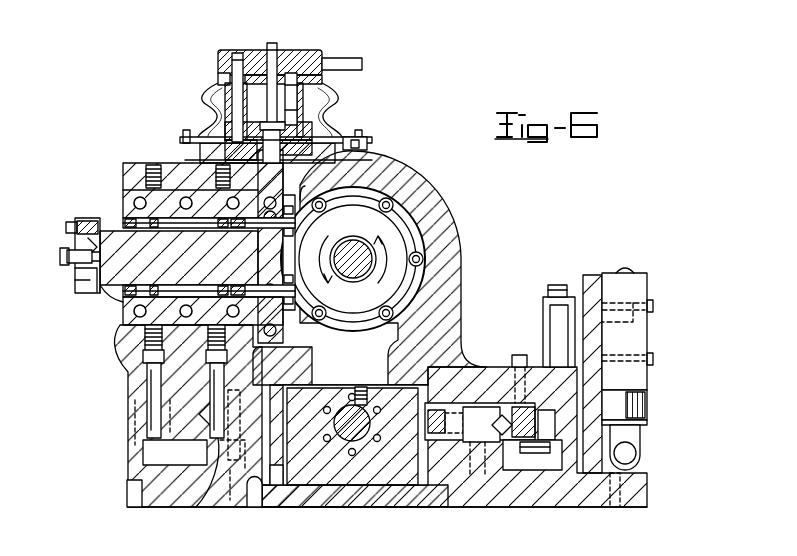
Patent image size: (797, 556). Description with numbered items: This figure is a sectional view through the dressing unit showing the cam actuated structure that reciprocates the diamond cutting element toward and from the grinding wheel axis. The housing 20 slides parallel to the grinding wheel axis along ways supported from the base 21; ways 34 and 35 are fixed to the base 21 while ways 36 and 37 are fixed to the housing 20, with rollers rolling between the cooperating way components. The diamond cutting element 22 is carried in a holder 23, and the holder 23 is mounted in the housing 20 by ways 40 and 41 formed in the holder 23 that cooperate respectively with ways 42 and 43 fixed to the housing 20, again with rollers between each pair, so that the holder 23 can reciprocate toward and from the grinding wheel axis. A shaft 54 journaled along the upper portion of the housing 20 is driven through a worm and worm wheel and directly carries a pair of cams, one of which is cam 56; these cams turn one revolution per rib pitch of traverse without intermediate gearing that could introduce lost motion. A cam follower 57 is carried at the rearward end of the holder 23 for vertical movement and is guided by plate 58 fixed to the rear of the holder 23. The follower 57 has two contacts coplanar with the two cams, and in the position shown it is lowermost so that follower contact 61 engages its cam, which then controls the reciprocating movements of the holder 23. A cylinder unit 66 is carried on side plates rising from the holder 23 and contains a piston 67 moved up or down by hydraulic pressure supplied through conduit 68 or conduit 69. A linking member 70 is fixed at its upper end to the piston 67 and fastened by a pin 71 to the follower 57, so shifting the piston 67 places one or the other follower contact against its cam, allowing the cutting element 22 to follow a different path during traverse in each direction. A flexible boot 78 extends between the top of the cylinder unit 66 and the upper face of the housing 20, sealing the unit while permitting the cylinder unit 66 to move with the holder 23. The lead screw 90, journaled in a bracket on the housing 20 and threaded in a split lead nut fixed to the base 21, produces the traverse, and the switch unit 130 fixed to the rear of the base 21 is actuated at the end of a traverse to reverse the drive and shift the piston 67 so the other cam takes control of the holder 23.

The housing 20 is at (427, 194).
The base 21 is at (517, 503).
The diamond cutting element 22 is at (63, 262).
The holder 23 is at (103, 222).
The way 34 is at (200, 505).
The way 35 is at (515, 449).
The way 36 is at (175, 452).
The way 37 is at (528, 449).
The way 40 is at (125, 226).
The way 41 is at (102, 290).
The way 42 is at (168, 198).
The way 43 is at (118, 339).
The shaft 54 is at (353, 277).
The cam 56 is at (357, 227).
The cam follower 57 is at (283, 330).
The plate 58 is at (284, 186).
The follower contact 61 is at (275, 240).
The cylinder unit 66 is at (292, 112).
The piston 67 is at (303, 123).
The conduit 68 is at (235, 55).
The conduit 69 is at (284, 49).
The linking member 70 is at (342, 160).
The pin 71 is at (383, 182).
The flexible boot 78 is at (207, 103).
The lead screw 90 is at (360, 438).
The switch unit 130 is at (632, 340).